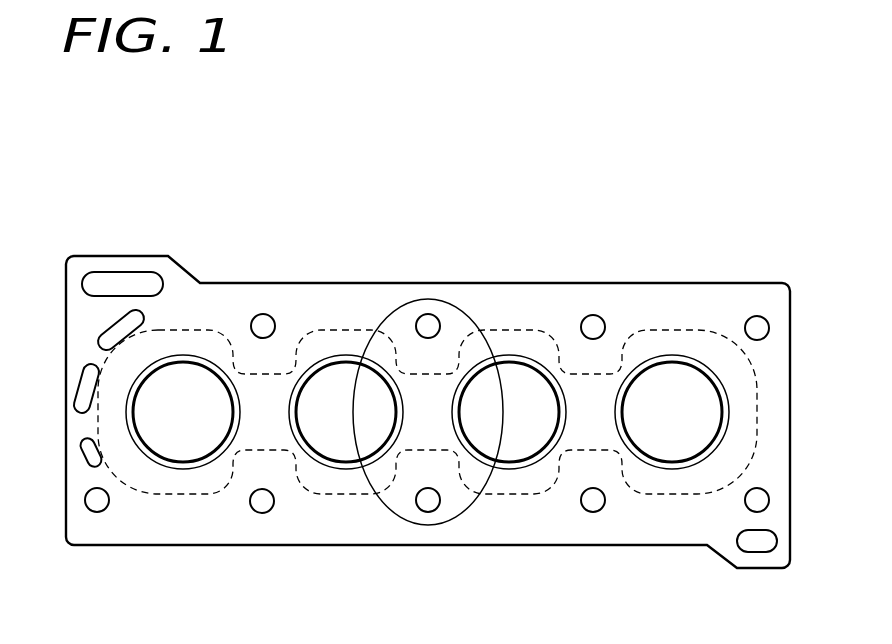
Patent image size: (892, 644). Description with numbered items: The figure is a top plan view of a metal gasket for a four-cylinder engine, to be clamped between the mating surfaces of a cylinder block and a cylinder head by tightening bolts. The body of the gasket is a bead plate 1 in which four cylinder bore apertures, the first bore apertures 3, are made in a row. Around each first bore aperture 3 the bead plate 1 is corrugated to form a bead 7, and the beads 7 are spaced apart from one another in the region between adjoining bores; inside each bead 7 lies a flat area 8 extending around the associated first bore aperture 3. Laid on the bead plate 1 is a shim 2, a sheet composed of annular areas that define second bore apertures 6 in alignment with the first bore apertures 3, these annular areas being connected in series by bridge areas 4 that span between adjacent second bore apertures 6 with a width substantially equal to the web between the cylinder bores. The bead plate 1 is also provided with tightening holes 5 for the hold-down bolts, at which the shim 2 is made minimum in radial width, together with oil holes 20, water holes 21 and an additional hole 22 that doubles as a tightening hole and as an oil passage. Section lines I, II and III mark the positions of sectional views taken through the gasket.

The bead plate 1 is at (772, 353).
The shim 2 is at (650, 460).
The first bore aperture 3 is at (677, 468).
The bridge area 4 is at (265, 420).
The tightening holes 5 is at (259, 318).
The second bore aperture 6 is at (716, 428).
The bead 7 is at (731, 413).
The flat area 8 is at (303, 380).
The oil holes 20 is at (760, 548).
The water holes 21 is at (128, 288).
The additional hole 22 is at (113, 328).
The section line I- I is at (460, 305).
The section line II- II is at (158, 420).
The section line III- III is at (186, 441).